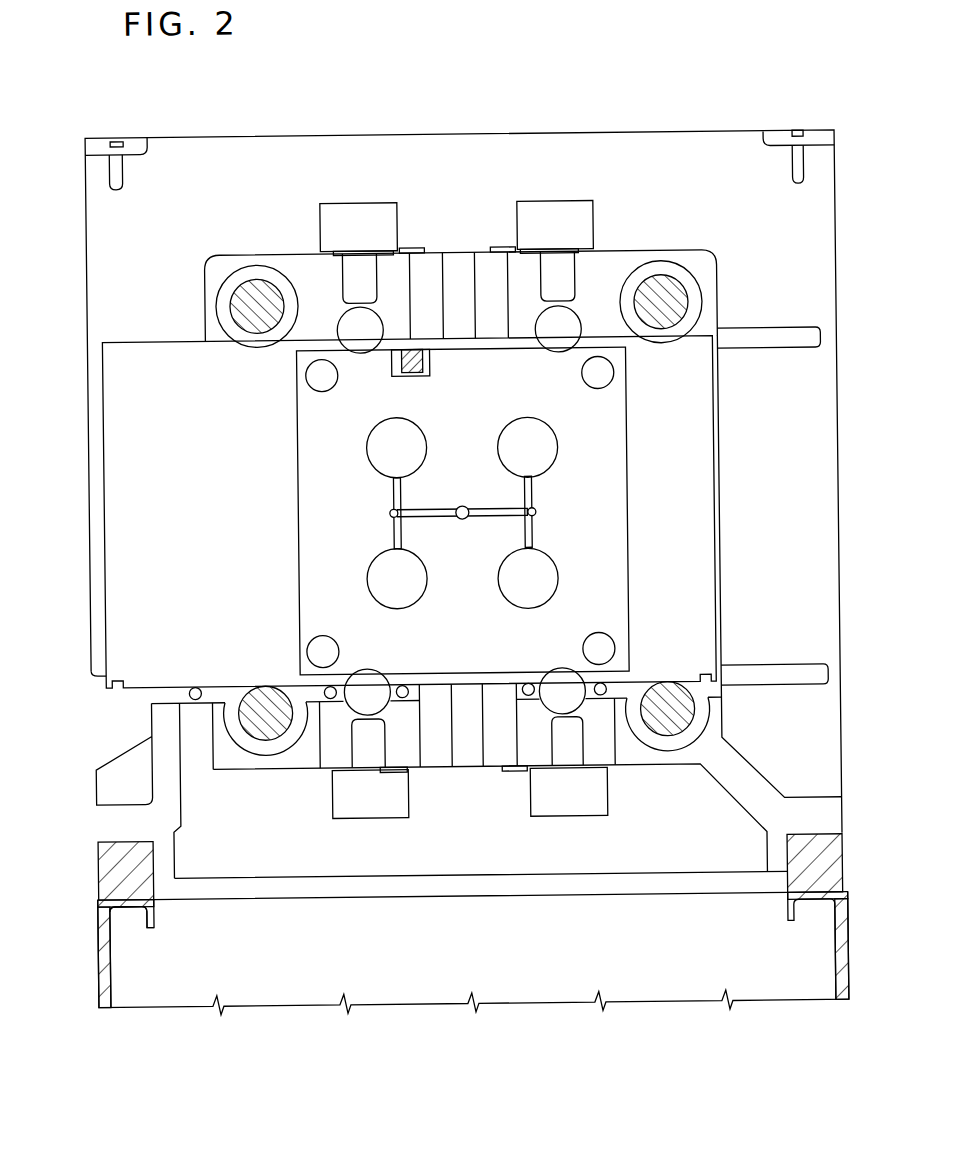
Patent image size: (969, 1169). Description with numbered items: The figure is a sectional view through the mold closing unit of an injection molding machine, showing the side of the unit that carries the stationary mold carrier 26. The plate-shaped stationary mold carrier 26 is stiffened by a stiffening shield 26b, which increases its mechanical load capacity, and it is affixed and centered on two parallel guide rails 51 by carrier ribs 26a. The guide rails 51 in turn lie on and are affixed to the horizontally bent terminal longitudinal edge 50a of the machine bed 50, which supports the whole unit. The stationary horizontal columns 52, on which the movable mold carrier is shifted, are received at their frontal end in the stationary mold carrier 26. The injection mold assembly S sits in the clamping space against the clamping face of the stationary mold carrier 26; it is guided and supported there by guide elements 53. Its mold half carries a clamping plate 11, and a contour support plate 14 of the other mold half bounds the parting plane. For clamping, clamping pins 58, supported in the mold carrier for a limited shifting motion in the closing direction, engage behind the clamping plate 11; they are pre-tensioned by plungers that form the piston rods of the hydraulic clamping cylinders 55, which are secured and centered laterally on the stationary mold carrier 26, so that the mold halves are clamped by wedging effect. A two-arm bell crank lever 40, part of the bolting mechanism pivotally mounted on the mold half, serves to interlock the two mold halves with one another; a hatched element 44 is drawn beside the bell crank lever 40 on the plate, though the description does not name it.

The clamping plate 11 is at (116, 473).
The contour support plate 14 is at (316, 490).
The stationary mold carrier 26 is at (718, 313).
The carrier ribs 26a is at (165, 769).
The stiffening shield 26b is at (714, 173).
The bell crank lever 40 is at (417, 377).
The specimen block 44 is at (426, 362).
The machine bed 50 is at (203, 992).
The terminal longitudinal edge 50a is at (113, 899).
The guide rails 51 is at (148, 897).
The horizontal columns 52 is at (665, 307).
The guide elements 53 is at (329, 697).
The hydraulic clamping cylinders 55 is at (354, 221).
The clamping pins 58 is at (344, 316).
The injection mold assembly S is at (630, 522).